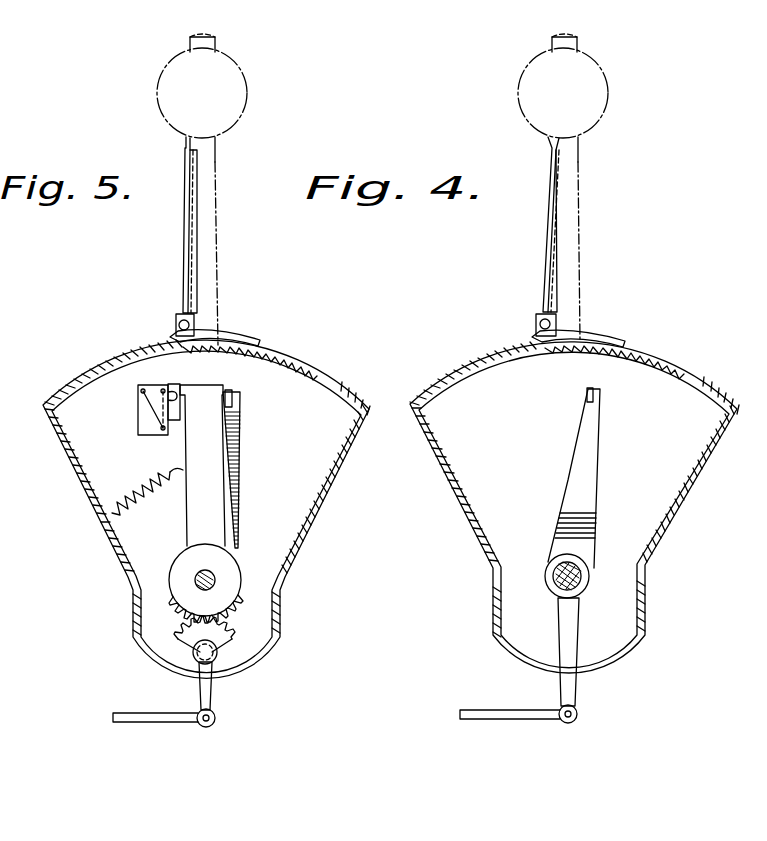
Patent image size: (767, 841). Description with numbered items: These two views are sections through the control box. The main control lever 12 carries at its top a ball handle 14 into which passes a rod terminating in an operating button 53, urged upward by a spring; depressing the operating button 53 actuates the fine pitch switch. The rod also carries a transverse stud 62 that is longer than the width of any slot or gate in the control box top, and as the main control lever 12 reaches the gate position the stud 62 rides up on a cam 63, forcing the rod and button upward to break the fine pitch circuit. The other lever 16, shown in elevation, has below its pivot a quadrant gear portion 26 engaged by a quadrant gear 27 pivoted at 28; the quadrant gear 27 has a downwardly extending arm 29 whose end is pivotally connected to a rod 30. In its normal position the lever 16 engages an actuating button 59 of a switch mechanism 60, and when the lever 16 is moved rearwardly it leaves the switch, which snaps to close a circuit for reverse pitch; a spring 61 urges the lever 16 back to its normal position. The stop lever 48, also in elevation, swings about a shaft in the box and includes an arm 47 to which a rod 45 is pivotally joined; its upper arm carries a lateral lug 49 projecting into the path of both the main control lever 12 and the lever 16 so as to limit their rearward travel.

In FIG. 5, the main control lever 12 is at (215, 212).
In FIG. 4, the main control lever 12 is at (578, 222).
In FIG. 5, the ball handle 14 is at (247, 98).
In FIG. 4, the ball handle 14 is at (608, 98).
In FIG. 5, the operating button 53 is at (216, 44).
In FIG. 4, the operating button 53 is at (578, 44).
In FIG. 5, the transverse stud 62 is at (176, 325).
In FIG. 4, the transverse stud 62 is at (536, 324).
In FIG. 5, the cam 63 is at (198, 339).
In FIG. 4, the cam 63 is at (578, 340).
In FIG. 5, the lever 16 is at (207, 497).
In FIG. 5, the quadrant gear portion 26 is at (228, 585).
In FIG. 5, the quadrant gear 27 is at (220, 635).
In FIG. 5, the pivot 28 is at (212, 665).
In FIG. 5, the downwardly extending arm 29 is at (212, 698).
In FIG. 5, the rod 30 is at (178, 722).
In FIG. 4, the rod 45 is at (538, 720).
In FIG. 4, the arm 47 is at (570, 687).
In FIG. 5, the stop lever 48 is at (240, 452).
In FIG. 4, the stop lever 48 is at (590, 487).
In FIG. 5, the lateral lug 49 is at (233, 392).
In FIG. 4, the lateral lug 49 is at (588, 394).
In FIG. 5, the actuating button 59 is at (172, 392).
In FIG. 5, the switch mechanism 60 is at (138, 412).
In FIG. 5, the spring 61 is at (126, 488).